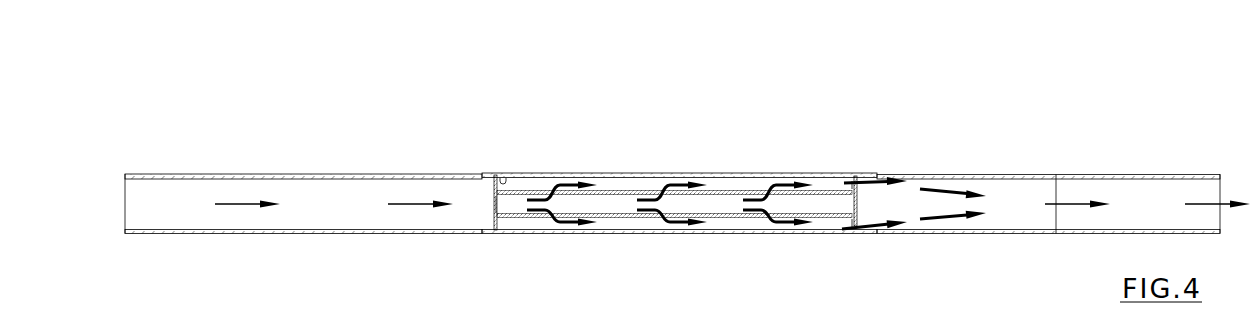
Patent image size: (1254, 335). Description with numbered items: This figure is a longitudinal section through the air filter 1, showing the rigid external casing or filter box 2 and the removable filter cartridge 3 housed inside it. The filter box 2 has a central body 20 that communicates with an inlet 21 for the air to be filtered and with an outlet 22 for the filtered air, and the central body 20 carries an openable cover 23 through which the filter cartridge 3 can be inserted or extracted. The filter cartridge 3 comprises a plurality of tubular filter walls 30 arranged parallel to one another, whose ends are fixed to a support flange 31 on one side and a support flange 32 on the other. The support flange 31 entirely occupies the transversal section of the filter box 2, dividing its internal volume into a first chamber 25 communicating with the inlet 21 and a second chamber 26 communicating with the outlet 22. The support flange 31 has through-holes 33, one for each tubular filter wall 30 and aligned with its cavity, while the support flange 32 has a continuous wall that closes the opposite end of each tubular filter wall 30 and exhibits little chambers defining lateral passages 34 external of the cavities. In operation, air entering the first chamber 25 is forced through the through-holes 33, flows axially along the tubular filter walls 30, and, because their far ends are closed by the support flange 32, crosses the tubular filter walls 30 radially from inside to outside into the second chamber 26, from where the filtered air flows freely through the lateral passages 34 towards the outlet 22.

The air filter 1 is at (300, 152).
The filter box 2 is at (357, 233).
The filter cartridge 3 is at (862, 209).
The central body 20 is at (706, 233).
The inlet 21 is at (177, 172).
The outlet 22 is at (1133, 174).
The openable cover 23 is at (665, 172).
The first chamber 25 is at (337, 208).
The second chamber 26 is at (827, 173).
The tubular filter walls 30 is at (620, 187).
The support flange 31 is at (505, 175).
The support flange 32 is at (858, 194).
The through-holes 33 is at (493, 203).
The lateral passages 34 is at (850, 181).